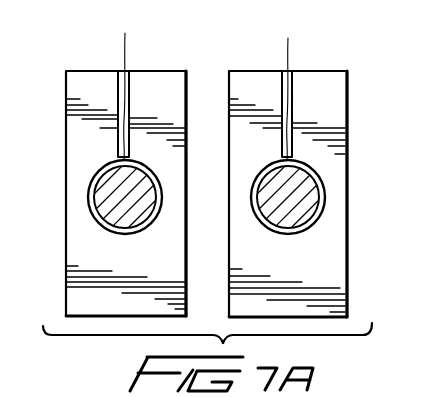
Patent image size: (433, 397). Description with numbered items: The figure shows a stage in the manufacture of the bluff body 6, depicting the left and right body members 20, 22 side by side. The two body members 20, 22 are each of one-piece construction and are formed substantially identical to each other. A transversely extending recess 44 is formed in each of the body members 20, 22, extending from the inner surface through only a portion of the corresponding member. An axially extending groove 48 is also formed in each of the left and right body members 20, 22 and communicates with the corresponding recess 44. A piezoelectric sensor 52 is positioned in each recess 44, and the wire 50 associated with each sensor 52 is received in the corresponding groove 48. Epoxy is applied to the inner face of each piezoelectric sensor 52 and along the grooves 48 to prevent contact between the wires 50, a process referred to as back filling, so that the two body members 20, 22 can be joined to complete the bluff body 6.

The bluff body 6 is at (360, 291).
The left body member 20 is at (160, 70).
The right body member 22 is at (320, 70).
The transversely extending recess 44 is at (152, 218).
The axially extending groove 48 is at (128, 90).
The wire 50 is at (122, 53).
The piezoelectric sensor 52 is at (108, 185).